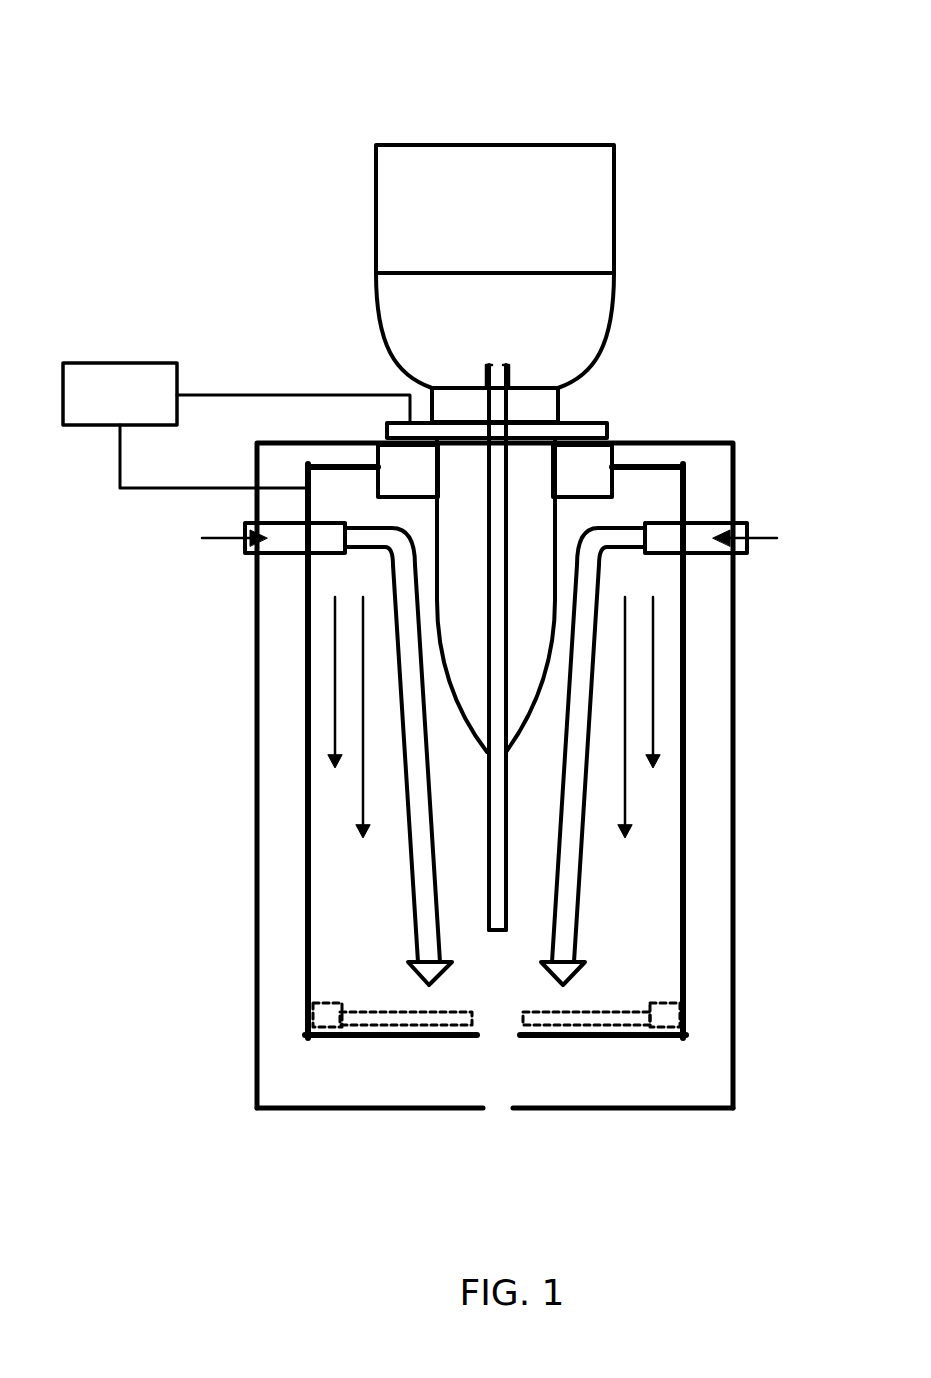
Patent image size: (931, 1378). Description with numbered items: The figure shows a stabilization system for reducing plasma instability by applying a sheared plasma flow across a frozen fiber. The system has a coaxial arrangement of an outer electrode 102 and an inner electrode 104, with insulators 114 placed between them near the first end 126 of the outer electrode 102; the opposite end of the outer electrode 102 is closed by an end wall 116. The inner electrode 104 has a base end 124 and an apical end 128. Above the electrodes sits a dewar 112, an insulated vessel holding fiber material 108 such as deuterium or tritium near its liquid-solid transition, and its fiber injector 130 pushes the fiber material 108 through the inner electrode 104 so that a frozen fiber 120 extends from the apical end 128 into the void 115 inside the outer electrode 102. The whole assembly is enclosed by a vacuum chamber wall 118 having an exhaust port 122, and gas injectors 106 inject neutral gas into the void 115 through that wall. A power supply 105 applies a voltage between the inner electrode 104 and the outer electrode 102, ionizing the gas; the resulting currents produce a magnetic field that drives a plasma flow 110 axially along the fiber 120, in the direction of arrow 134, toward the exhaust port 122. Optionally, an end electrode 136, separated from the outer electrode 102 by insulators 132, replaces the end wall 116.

The outer electrode 102 is at (683, 908).
The inner electrode 104 is at (437, 521).
The power supply 105 is at (236, 425).
The gas injectors 106 is at (749, 527).
The fiber material 108 is at (528, 273).
The plasma flow 110 is at (418, 936).
The dewar 112 is at (444, 146).
The insulators 114 is at (606, 442).
The void 115 is at (647, 717).
The end wall 116 is at (412, 1039).
The vacuum chamber wall 118 is at (257, 690).
The frozen fiber 120 is at (497, 932).
The exhaust port 122 is at (491, 1128).
The base end 124 is at (390, 429).
The first end 126 is at (685, 463).
The apical end 128 is at (517, 758).
The fiber injector 130 is at (509, 365).
The insulators 132 is at (668, 1005).
The arrow 134 is at (350, 602).
The end electrode 136 is at (392, 1014).